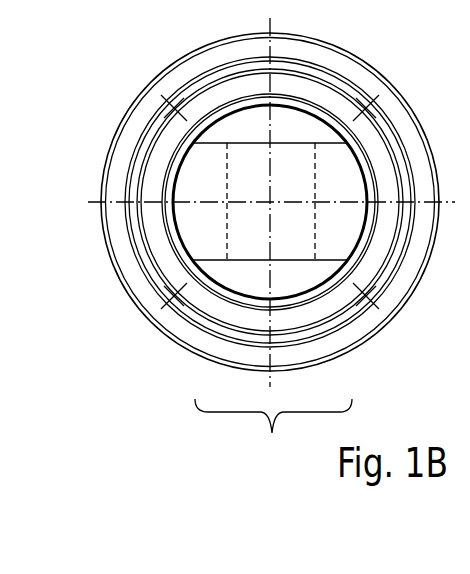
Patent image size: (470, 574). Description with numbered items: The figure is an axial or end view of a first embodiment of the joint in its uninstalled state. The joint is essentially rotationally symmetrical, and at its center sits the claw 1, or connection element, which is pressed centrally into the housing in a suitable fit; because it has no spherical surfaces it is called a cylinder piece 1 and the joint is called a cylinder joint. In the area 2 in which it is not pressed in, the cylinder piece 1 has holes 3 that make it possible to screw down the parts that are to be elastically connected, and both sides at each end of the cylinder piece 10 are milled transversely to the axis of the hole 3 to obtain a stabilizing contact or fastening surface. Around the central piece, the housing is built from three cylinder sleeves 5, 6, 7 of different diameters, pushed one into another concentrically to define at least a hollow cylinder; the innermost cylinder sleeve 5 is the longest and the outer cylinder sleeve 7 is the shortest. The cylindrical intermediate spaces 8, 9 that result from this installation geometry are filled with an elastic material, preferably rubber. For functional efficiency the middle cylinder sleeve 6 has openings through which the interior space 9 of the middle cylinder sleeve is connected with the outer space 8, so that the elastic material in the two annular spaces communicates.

The claw 1 is at (277, 127).
The area 2 is at (202, 172).
The holes 3 is at (247, 172).
The innermost cylinder sleeve 5 is at (375, 181).
The middle cylinder sleeve 6 is at (403, 233).
The outer cylinder sleeve 7 is at (392, 313).
The cylindrical intermediate space 8 is at (135, 268).
The cylindrical intermediate space 9 is at (152, 220).
The cylinder piece 10 is at (273, 432).